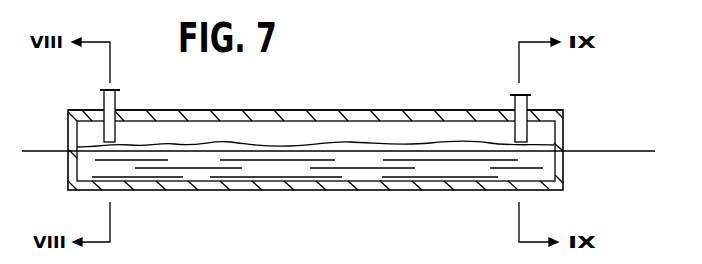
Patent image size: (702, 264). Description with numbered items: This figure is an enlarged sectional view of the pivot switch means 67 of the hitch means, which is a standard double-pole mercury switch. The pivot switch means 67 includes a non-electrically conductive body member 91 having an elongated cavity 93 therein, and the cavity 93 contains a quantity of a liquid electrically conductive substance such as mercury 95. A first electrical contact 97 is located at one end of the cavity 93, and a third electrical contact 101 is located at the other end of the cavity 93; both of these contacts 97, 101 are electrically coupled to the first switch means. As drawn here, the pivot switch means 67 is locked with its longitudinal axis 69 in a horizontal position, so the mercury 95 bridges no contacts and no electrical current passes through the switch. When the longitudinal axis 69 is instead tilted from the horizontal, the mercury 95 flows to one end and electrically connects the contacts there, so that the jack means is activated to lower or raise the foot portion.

The pivot switch means 67 is at (458, 68).
The longitudinal axis 69 is at (626, 152).
The non-electrically conductive body member 91 is at (252, 110).
The cavity 93 is at (351, 120).
The mercury 95 is at (425, 172).
The first electrical contact 97 is at (104, 131).
The third electrical contact 101 is at (527, 134).